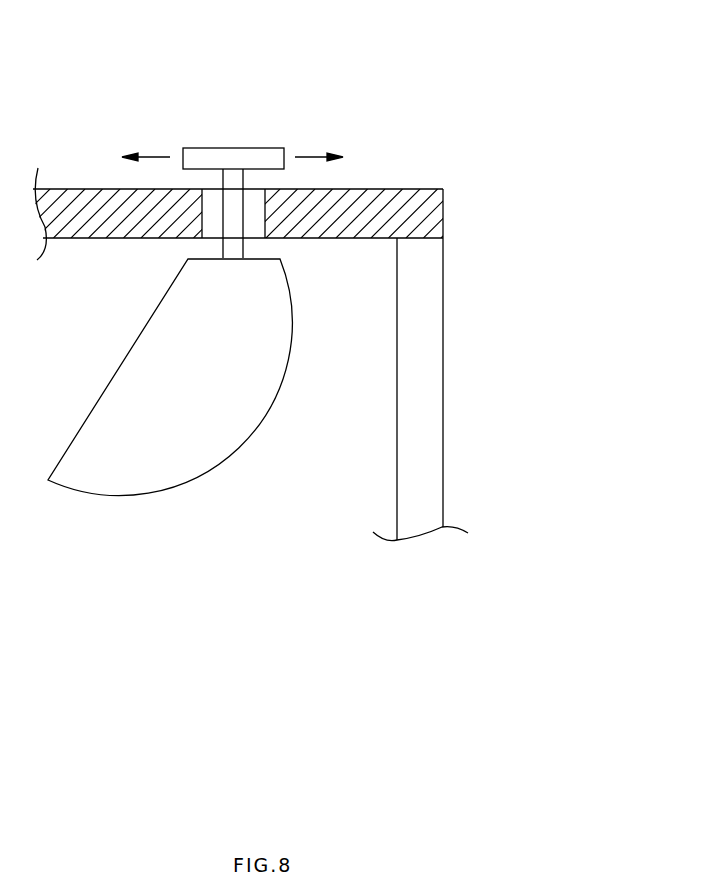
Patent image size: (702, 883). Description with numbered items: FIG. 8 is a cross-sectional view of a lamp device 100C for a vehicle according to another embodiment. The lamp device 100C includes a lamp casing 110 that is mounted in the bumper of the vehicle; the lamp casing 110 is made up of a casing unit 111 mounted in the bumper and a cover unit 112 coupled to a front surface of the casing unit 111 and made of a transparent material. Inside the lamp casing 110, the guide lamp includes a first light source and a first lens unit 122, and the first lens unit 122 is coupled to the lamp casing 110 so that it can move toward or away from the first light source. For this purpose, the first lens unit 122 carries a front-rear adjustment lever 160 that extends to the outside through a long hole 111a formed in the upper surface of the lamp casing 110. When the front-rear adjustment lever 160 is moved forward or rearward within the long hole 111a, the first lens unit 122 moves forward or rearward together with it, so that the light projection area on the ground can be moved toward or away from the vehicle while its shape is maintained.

The lamp device for a vehicle 100C is at (398, 87).
The lamp casing 110 is at (528, 205).
The casing unit 111 is at (428, 212).
The long hole 111a is at (212, 200).
The cover unit 112 is at (427, 290).
The first lens unit 122 is at (275, 363).
The front-rear adjustment lever 160 is at (284, 150).